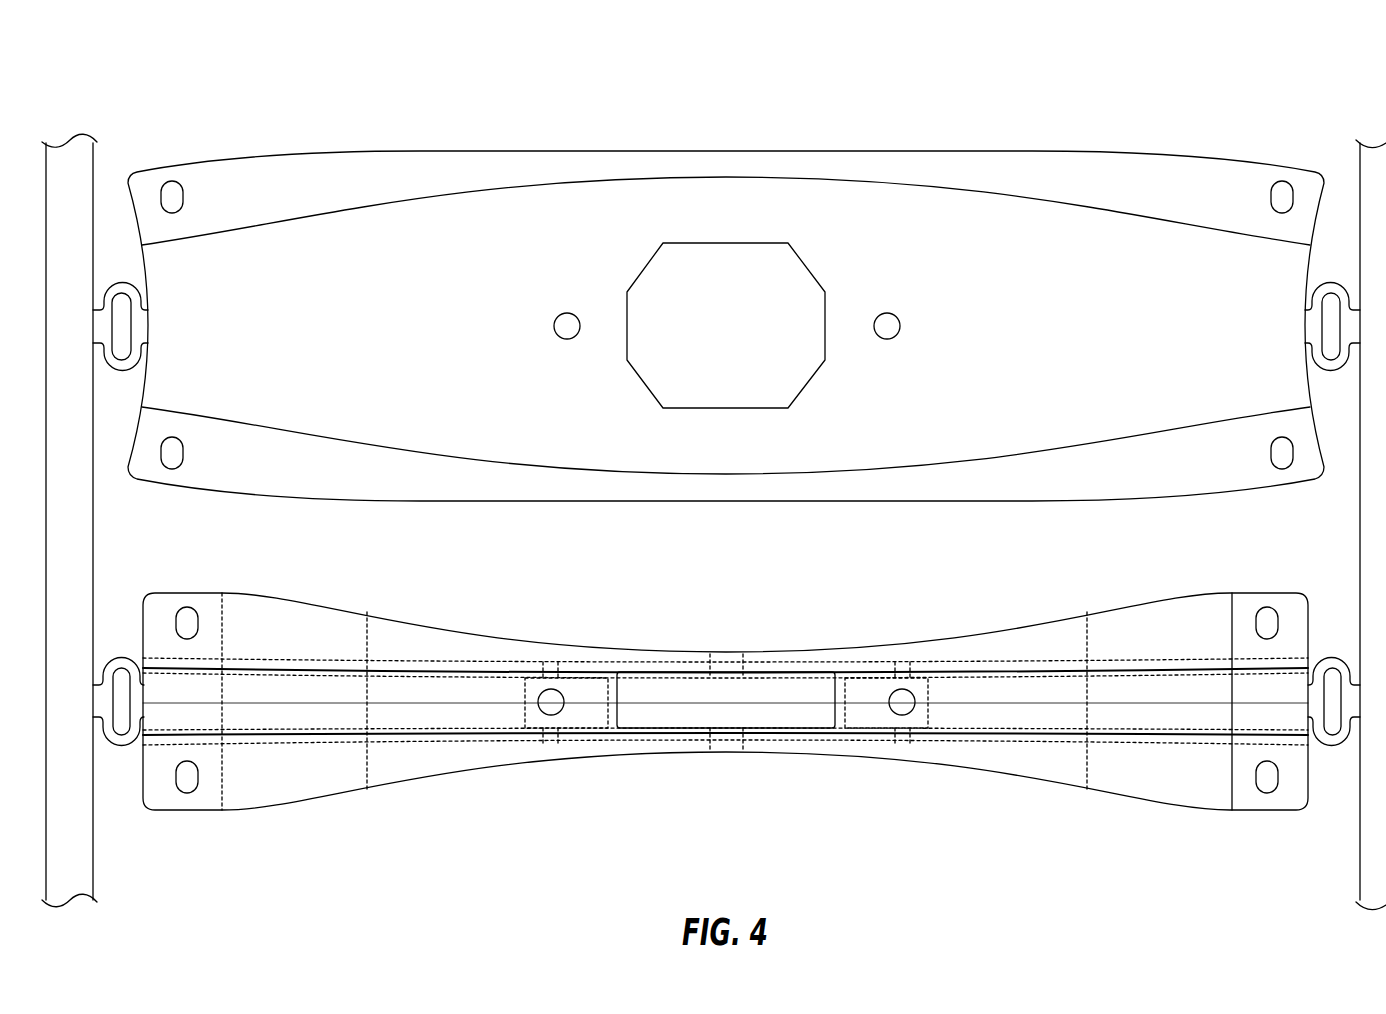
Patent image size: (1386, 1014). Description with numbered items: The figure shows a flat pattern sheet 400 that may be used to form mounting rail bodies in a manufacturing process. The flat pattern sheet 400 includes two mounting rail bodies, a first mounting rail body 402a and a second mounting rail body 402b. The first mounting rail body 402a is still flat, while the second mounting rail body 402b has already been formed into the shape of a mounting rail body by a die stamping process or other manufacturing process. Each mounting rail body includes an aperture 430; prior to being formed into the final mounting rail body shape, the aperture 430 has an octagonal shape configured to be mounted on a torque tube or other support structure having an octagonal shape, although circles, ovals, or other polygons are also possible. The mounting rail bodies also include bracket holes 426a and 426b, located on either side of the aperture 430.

The flat pattern sheet 400 is at (110, 84).
The first mounting rail body 402a is at (1226, 153).
The second mounting rail body 402b is at (1125, 799).
The bracket hole 426a is at (563, 314).
The bracket hole 426b is at (891, 314).
The aperture 430 is at (723, 254).